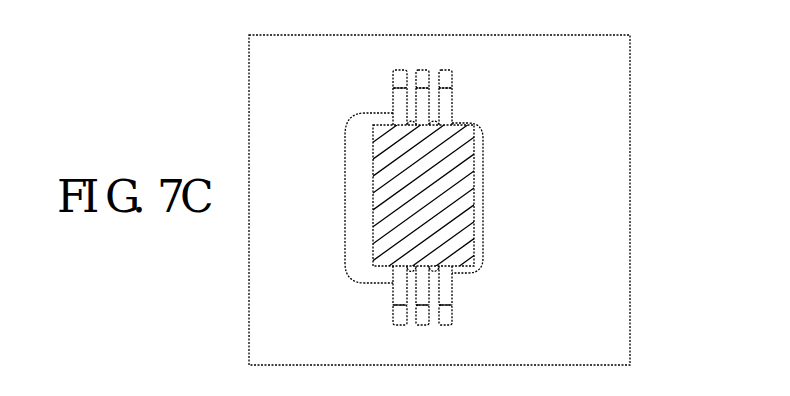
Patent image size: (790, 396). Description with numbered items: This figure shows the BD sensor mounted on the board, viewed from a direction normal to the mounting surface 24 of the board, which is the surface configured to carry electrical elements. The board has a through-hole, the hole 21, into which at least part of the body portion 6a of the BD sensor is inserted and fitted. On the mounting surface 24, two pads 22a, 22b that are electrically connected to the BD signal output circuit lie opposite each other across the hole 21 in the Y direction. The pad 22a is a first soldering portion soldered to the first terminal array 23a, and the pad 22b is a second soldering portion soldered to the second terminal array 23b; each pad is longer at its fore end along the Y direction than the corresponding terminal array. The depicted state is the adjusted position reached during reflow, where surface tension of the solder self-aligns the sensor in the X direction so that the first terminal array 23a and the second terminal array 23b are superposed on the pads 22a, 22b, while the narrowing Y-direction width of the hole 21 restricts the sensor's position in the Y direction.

The body portion 6a is at (373, 222).
The hole 21 is at (483, 190).
The pad 22a is at (453, 78).
The pad 22b is at (453, 315).
The first terminal array 23a is at (453, 106).
The second terminal array 23b is at (453, 285).
The mounting surface 24 is at (622, 182).